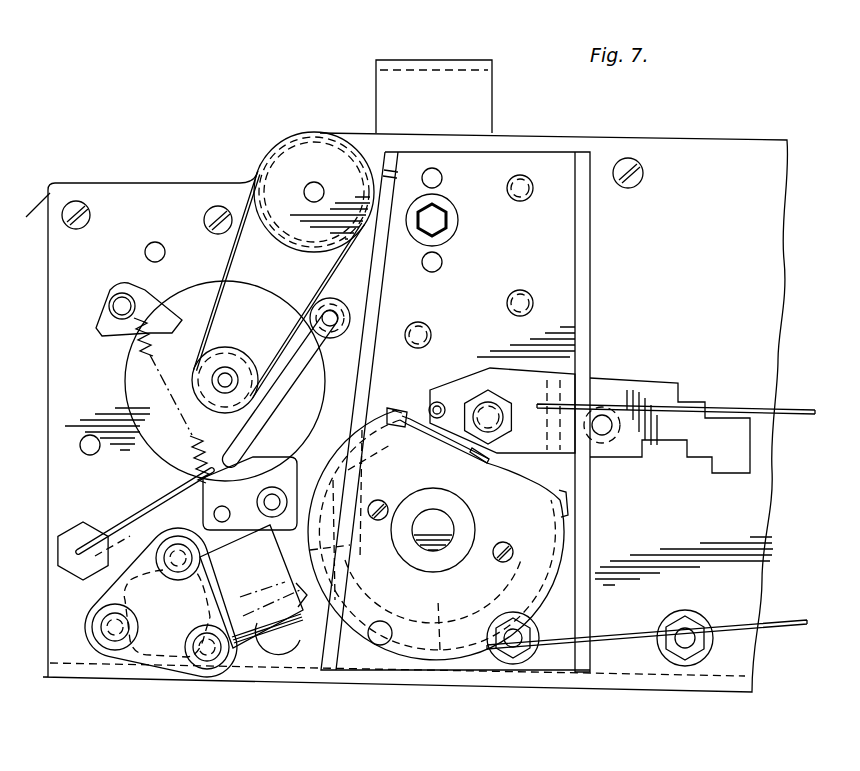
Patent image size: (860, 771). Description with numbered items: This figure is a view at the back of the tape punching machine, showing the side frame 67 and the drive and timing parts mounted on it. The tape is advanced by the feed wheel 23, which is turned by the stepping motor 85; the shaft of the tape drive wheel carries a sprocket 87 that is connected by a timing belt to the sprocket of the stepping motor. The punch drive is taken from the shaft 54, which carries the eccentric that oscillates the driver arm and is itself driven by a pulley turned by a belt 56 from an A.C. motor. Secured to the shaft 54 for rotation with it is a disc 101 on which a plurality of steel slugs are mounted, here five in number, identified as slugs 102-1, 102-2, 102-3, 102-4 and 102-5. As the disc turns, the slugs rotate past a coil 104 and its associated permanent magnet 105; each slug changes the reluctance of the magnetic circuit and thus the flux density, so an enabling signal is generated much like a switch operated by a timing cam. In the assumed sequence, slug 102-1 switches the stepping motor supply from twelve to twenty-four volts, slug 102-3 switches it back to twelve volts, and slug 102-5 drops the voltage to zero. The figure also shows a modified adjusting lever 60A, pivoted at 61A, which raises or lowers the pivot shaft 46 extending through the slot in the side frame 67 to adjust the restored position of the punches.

The feed wheel 23 is at (297, 126).
The sprocket 87 is at (352, 132).
The side frame 67 is at (720, 148).
The stepping motor 85 is at (207, 296).
The pivot 61A is at (437, 400).
The shaft 46 is at (488, 400).
The slug 102-1 is at (566, 506).
The slug 102-2 is at (476, 458).
The slug 102-3 is at (412, 428).
The slug 102-4 is at (345, 541).
The slug 102-5 is at (450, 574).
The shaft 54 is at (447, 545).
The lever 60A is at (643, 383).
The belt 56 is at (772, 630).
The permanent magnet 105 is at (170, 657).
The coil 104 is at (243, 648).
The disc 101 is at (443, 658).